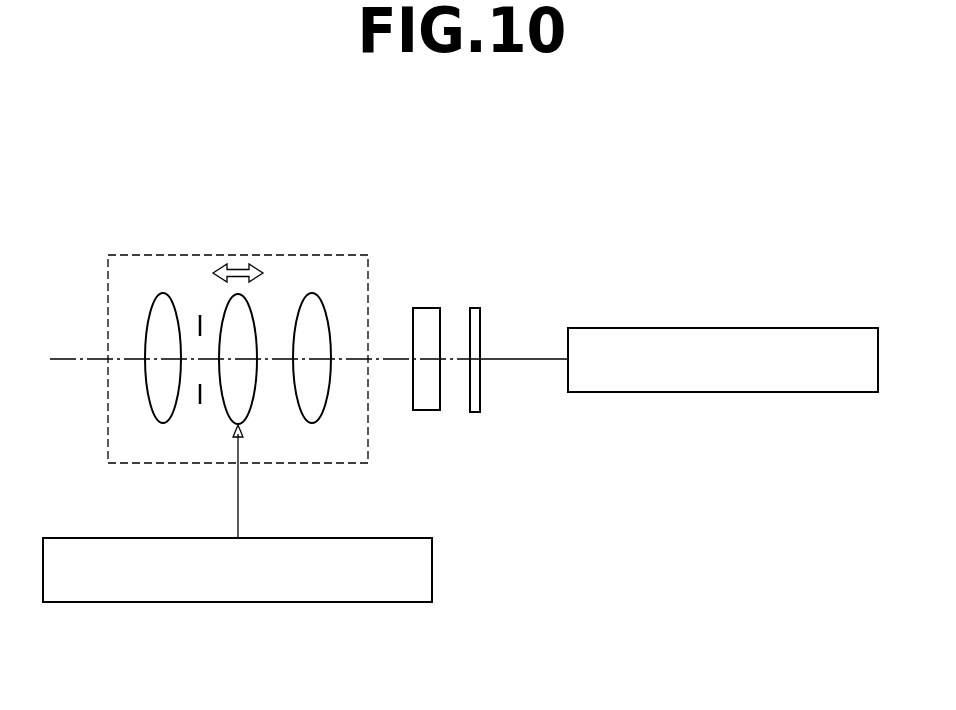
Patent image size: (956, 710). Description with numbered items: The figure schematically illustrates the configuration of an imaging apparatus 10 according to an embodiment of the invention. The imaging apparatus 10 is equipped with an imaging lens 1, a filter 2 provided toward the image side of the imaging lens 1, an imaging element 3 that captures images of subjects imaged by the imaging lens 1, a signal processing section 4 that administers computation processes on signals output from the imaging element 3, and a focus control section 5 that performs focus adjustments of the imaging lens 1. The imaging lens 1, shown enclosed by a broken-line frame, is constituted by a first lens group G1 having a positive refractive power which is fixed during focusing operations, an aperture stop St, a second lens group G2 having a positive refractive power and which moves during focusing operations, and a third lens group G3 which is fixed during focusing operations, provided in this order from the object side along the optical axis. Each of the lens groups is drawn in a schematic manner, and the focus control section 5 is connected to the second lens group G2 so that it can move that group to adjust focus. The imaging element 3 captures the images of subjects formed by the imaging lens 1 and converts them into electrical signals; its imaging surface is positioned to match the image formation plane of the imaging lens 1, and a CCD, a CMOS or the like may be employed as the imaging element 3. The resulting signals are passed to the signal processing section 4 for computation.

The imaging apparatus 10 is at (353, 174).
The imaging lens 1 is at (107, 442).
The first lens group G1 is at (162, 292).
The aperture stop St is at (197, 327).
The second lens group G2 is at (257, 328).
The third lens group G3 is at (313, 293).
The filter 2 is at (430, 306).
The imaging element 3 is at (475, 306).
The signal processing section 4 is at (860, 327).
The focus control section 5 is at (412, 603).